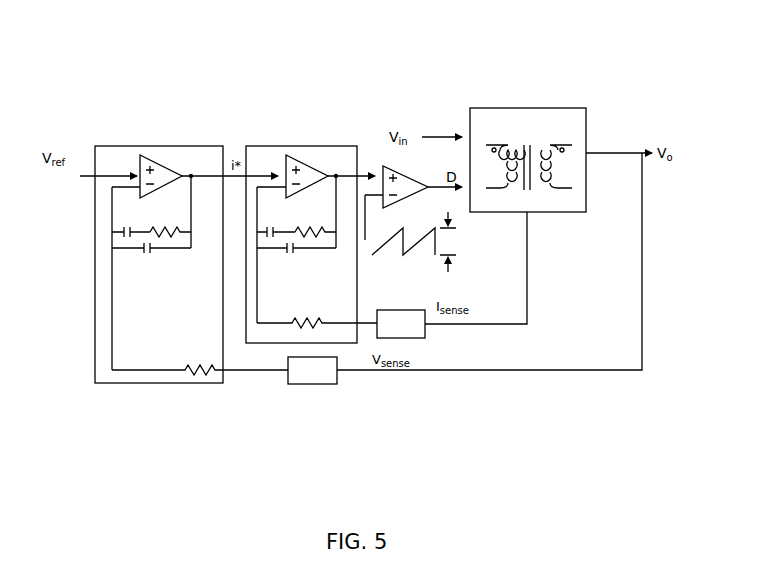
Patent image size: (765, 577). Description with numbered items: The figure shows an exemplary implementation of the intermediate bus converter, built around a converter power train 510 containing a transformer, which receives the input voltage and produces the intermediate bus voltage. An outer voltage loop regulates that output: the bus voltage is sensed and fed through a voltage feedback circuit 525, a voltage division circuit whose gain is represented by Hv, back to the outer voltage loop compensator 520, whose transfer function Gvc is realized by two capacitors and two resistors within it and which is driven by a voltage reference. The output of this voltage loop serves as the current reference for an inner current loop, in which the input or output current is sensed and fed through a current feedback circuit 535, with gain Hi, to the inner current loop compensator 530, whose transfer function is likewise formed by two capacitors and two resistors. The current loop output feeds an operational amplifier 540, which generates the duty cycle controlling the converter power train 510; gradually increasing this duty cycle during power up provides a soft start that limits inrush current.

The converter power train 510 is at (542, 95).
The outer voltage loop compensator 520 is at (148, 121).
The voltage feedback circuit 525 is at (298, 392).
The inner current loop compensator 530 is at (332, 127).
The current feedback circuit 535 is at (425, 343).
The operational amplifier 540 is at (388, 160).